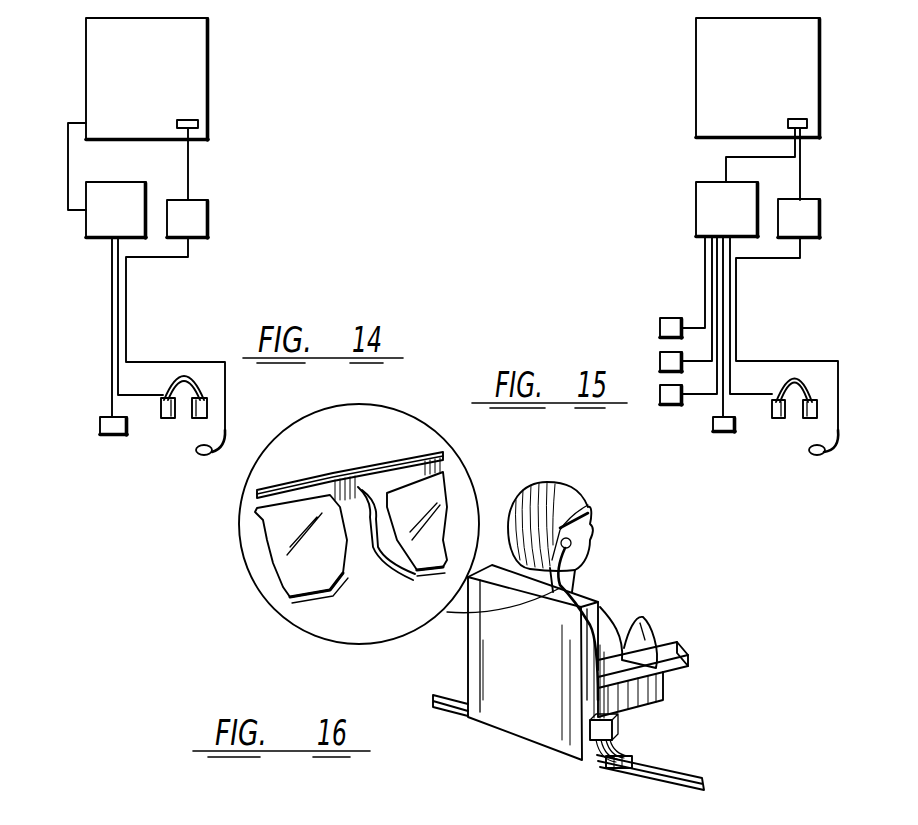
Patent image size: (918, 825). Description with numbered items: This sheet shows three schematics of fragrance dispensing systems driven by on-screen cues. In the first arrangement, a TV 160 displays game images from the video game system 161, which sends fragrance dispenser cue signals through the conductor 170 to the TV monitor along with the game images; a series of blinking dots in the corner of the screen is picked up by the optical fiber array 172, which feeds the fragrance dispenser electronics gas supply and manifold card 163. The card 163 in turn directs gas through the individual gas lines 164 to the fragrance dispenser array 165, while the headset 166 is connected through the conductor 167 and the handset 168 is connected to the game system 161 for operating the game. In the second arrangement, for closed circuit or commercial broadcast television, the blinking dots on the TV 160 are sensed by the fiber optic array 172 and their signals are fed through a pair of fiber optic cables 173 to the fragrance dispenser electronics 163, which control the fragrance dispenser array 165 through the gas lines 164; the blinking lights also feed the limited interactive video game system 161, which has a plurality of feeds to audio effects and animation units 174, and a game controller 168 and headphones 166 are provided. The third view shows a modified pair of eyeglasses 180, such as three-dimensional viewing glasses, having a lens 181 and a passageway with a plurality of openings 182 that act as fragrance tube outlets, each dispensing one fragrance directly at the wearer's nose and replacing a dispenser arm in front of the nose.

In FIG. 14, the TV 160 is at (166, 72).
In FIG. 15, the TV 160 is at (735, 72).
In FIG. 14, the video game system 161 is at (135, 222).
In FIG. 15, the video game system 161 is at (709, 222).
In FIG. 14, the fragrance dispenser electronics gas supply and manifold card 163 is at (208, 209).
In FIG. 15, the fragrance dispenser electronics gas supply and manifold card 163 is at (820, 226).
In FIG. 14, the individual gas lines 164 is at (128, 301).
In FIG. 15, the individual gas lines 164 is at (737, 307).
In FIG. 14, the fragrance dispenser array 165 is at (217, 452).
In FIG. 15, the fragrance dispenser array 165 is at (840, 440).
In FIG. 14, the headset 166 is at (168, 420).
In FIG. 15, the headset 166 is at (782, 420).
In FIG. 14, the conductor 167 is at (117, 383).
In FIG. 14, the handset 168 is at (100, 426).
In FIG. 15, the handset 168 is at (713, 428).
In FIG. 14, the conductor 170 is at (68, 172).
In FIG. 14, the optical fiber array 172 is at (192, 118).
In FIG. 15, the optical fiber array 172 is at (802, 118).
In FIG. 15, the fiber optic cables 173 is at (725, 163).
In FIG. 15, the audio effects and animation units 174 is at (669, 317).
In FIG. 16, the eyeglasses 180 is at (298, 478).
In FIG. 16, the lens 181 is at (298, 567).
In FIG. 16, the openings 182 is at (400, 575).